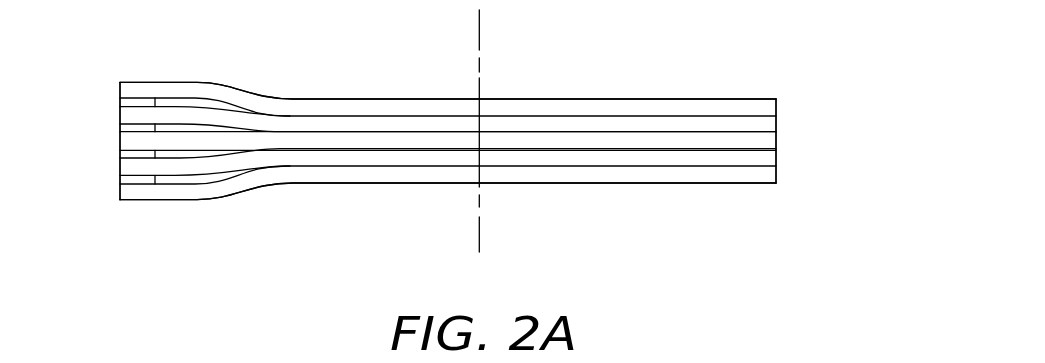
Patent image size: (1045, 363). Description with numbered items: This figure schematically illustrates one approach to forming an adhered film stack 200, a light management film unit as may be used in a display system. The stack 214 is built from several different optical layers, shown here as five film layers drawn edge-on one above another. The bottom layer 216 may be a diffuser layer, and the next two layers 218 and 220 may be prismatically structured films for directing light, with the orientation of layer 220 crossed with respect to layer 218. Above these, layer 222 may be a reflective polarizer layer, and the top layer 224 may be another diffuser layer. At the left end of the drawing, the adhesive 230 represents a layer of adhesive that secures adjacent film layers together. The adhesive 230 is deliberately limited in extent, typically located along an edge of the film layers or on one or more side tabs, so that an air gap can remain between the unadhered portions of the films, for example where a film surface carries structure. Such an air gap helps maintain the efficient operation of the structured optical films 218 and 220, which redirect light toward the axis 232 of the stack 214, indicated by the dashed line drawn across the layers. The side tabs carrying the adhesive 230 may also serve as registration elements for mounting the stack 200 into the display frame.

The adhered film stack 200 is at (313, 207).
The stack 214 is at (856, 36).
The diffuser layer 216 is at (777, 172).
The prismatically structured film 218 is at (777, 155).
The prismatically structured film 220 is at (777, 141).
The reflective polarizer layer 222 is at (777, 125).
The diffuser layer 224 is at (778, 98).
The adhesive 230 is at (120, 102).
The axis 232 is at (480, 227).